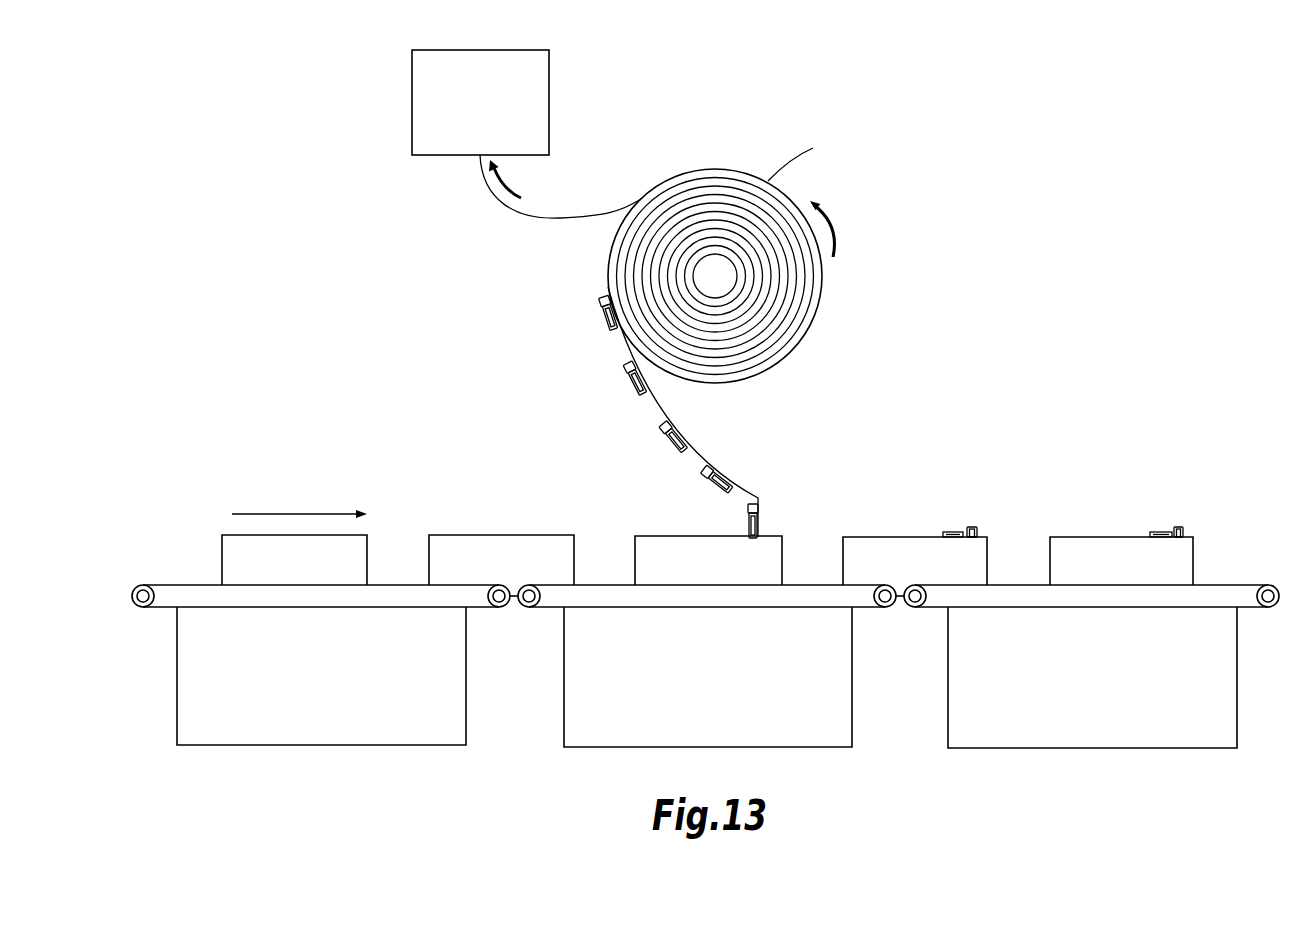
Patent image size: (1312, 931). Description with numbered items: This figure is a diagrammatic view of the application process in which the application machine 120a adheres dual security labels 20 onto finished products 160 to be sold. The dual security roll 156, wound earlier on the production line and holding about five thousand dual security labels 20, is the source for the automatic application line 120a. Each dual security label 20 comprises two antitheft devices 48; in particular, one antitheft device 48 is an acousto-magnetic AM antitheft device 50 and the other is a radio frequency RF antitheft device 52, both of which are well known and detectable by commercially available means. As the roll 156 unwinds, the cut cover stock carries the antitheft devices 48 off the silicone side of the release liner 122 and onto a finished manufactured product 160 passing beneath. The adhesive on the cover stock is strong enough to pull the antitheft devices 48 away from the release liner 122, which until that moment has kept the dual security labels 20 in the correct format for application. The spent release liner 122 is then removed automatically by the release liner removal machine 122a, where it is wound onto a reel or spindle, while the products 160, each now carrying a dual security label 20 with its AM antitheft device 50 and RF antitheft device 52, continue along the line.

The release liner removal machine 122a is at (412, 80).
The release liner 122 is at (517, 210).
The roll 156 is at (688, 170).
The application machine 120a is at (1036, 247).
The AM antitheft device 50 is at (604, 309).
The RF antitheft device 52 is at (638, 386).
The dual security label 20 is at (934, 536).
The antitheft device 48 is at (956, 531).
The product 160 is at (272, 571).